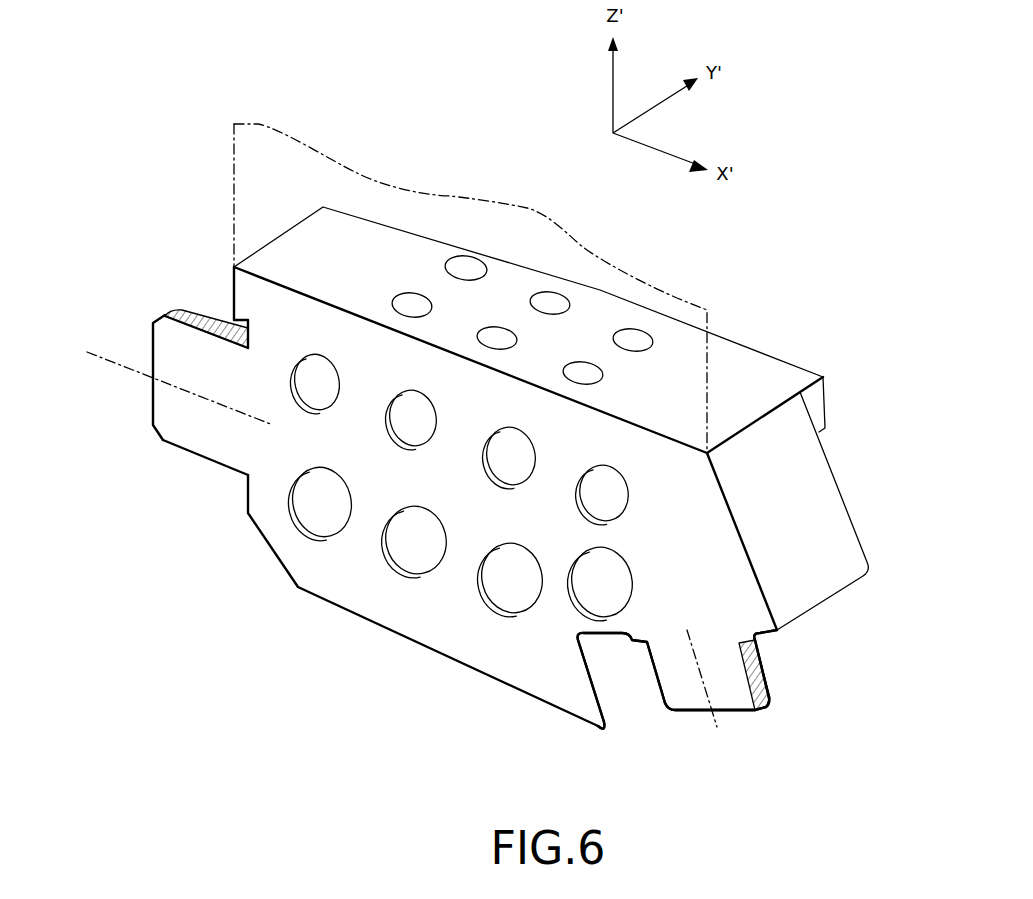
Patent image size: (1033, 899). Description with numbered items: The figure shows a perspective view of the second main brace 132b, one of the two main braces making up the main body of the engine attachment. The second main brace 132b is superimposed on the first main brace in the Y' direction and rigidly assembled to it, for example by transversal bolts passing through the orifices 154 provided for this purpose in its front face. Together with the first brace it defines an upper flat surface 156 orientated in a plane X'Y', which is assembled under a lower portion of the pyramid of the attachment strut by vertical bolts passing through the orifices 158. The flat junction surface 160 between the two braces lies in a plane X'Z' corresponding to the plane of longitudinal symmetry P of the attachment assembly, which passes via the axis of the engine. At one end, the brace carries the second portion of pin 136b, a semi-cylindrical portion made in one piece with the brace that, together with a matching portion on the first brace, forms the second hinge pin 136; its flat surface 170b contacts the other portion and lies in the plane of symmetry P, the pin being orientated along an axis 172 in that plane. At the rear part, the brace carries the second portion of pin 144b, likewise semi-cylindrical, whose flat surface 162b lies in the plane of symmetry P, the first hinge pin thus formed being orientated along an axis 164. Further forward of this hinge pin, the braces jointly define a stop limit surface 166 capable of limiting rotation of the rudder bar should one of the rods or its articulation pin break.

The plane of longitudinal symmetry P is at (233, 143).
The second main brace 132b is at (712, 278).
The second hinge pin 136 is at (128, 465).
The second portion of pin 136b is at (205, 318).
The second portion of pin 144b is at (760, 732).
The orifices 154 is at (320, 388).
The upper flat surface 156 is at (317, 252).
The orifices 158 is at (410, 307).
The flat junction surface 160 is at (388, 607).
The flat surface 162b is at (692, 698).
The axis 164 is at (703, 645).
The stop limit surface 166 is at (615, 712).
The flat surface 170b is at (210, 450).
The axis 172 is at (107, 360).